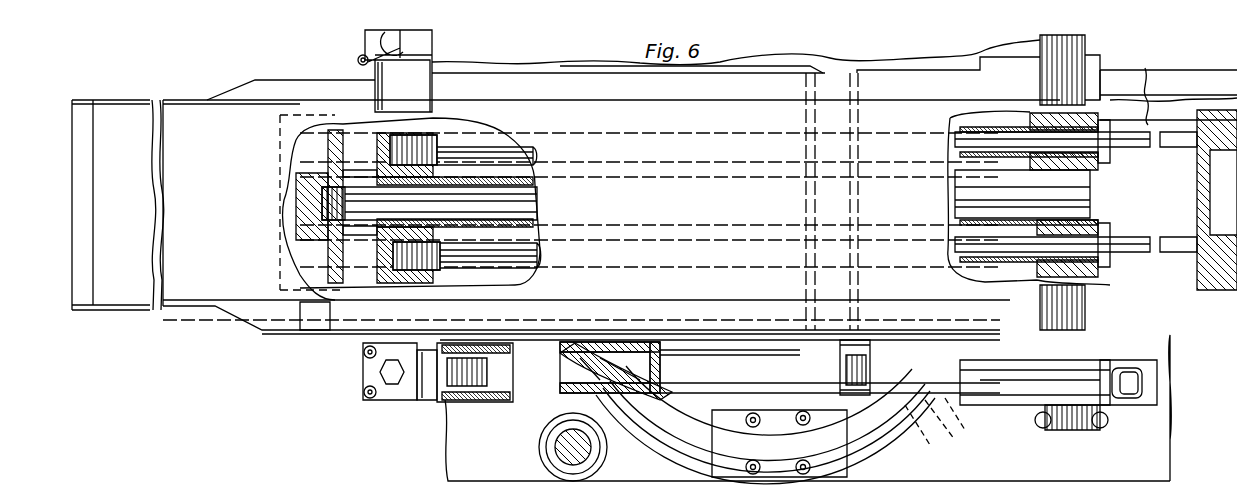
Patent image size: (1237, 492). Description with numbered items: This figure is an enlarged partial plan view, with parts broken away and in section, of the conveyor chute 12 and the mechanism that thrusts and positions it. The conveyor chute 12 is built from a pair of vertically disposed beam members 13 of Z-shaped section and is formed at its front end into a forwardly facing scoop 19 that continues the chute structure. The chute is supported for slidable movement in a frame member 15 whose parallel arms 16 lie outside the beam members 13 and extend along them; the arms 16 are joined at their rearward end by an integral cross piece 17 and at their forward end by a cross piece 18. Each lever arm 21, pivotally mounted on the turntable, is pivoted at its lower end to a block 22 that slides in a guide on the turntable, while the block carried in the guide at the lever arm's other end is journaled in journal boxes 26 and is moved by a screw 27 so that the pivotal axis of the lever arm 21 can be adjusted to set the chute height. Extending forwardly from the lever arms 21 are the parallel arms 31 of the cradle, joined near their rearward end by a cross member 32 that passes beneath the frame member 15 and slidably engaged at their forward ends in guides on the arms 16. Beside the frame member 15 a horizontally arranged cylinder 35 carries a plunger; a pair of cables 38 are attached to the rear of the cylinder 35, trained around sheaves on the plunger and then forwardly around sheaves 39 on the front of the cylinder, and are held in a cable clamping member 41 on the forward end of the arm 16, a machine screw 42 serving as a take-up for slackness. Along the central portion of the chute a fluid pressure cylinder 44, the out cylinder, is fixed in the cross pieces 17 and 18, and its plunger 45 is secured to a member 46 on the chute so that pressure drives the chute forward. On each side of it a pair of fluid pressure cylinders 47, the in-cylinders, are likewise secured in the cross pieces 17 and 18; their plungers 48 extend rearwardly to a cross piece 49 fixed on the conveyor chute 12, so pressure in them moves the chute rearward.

The conveyor chute 12 is at (240, 325).
The beam members 13 is at (308, 62).
The frame member 15 is at (1104, 68).
The parallel arms 16 is at (546, 73).
The cross piece 17 is at (1128, 150).
The cross piece 18 is at (388, 268).
The scoop 19 is at (82, 312).
The lever arm 21 is at (1016, 405).
The block 22 is at (760, 380).
The journal boxes 26 is at (1090, 330).
The screw 27 is at (1142, 380).
The parallel arms 31 is at (366, 358).
The cross member 32 is at (862, 275).
The cylinder 35 is at (540, 400).
The cables 38 is at (482, 358).
The sheaves 39 is at (428, 402).
The cable clamping member 41 is at (366, 396).
The machine screw 42 is at (386, 372).
The fluid pressure cylinder 44 is at (975, 160).
The plunger 45 is at (500, 190).
The member 46 is at (320, 308).
The fluid pressure cylinders 47 is at (470, 138).
The plungers 48 is at (1135, 237).
The cross piece 49 is at (1198, 212).